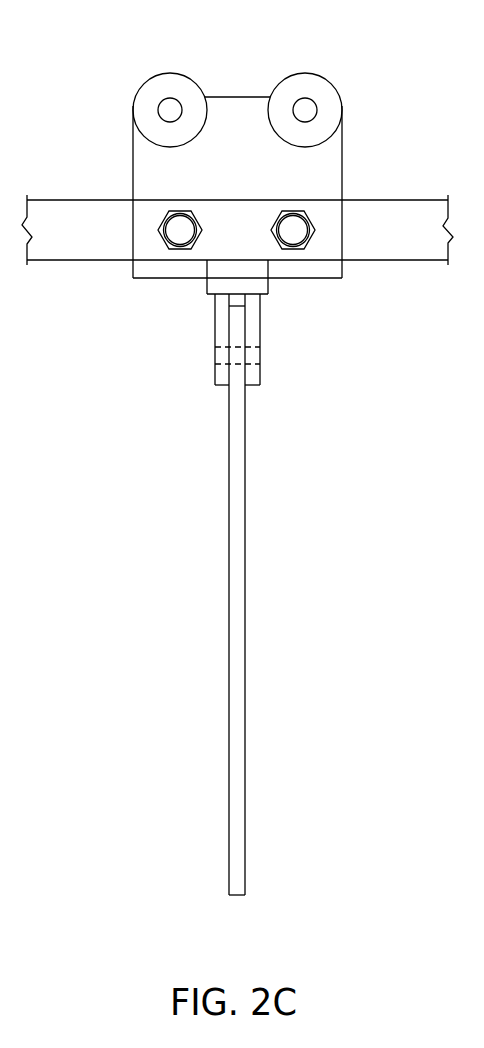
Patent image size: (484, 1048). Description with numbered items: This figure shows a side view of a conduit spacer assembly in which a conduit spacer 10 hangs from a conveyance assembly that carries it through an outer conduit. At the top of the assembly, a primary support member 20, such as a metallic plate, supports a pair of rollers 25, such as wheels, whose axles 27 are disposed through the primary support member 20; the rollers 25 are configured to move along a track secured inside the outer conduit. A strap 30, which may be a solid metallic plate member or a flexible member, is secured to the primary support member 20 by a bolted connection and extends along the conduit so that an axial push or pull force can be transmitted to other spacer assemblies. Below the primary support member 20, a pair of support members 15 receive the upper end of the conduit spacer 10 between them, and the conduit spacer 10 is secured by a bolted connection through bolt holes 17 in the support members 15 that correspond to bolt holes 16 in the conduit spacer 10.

The conduit spacer 10 is at (237, 448).
The support members 15 is at (213, 318).
The bolt holes 16 is at (237, 364).
The bolt holes 17 is at (217, 364).
The primary support member 20 is at (343, 168).
The rollers 25 is at (165, 73).
The axles 27 is at (158, 108).
The strap 30 is at (92, 260).